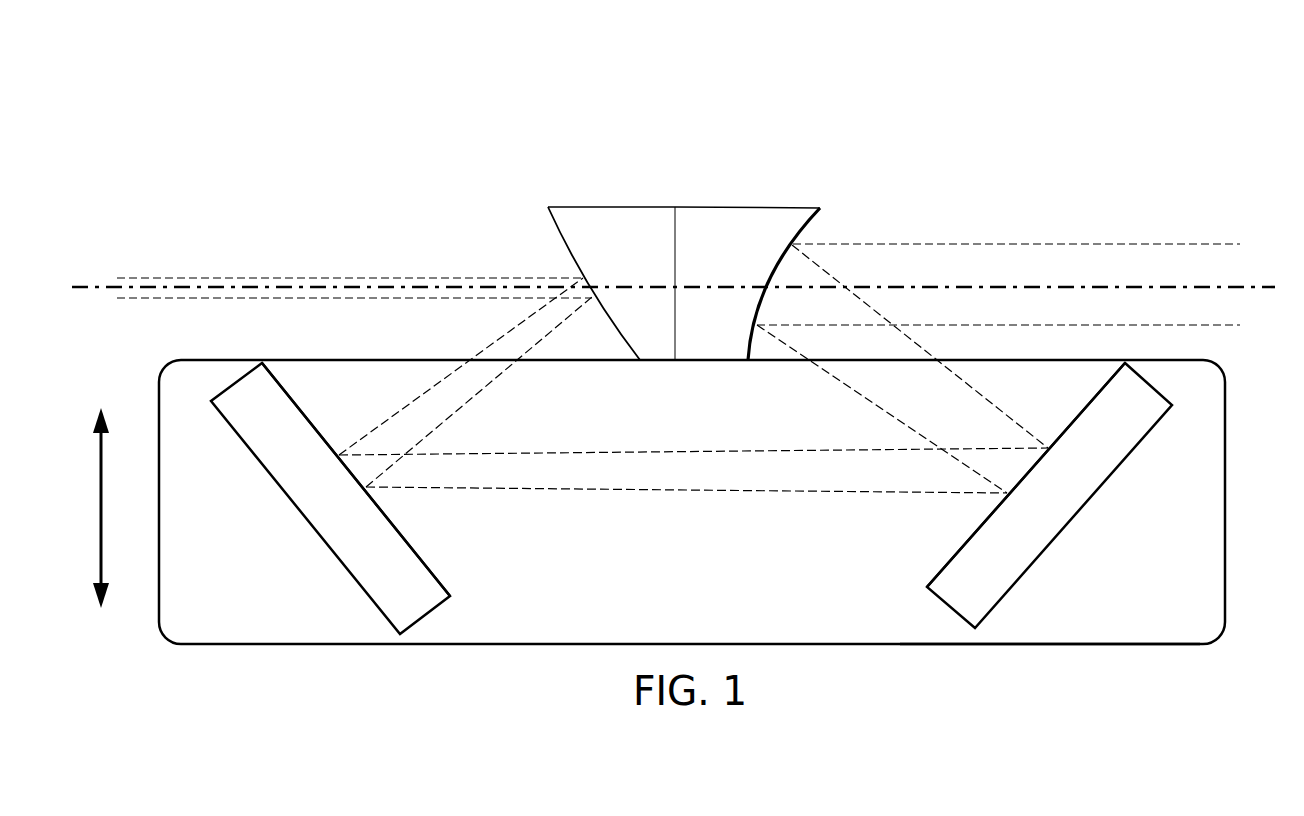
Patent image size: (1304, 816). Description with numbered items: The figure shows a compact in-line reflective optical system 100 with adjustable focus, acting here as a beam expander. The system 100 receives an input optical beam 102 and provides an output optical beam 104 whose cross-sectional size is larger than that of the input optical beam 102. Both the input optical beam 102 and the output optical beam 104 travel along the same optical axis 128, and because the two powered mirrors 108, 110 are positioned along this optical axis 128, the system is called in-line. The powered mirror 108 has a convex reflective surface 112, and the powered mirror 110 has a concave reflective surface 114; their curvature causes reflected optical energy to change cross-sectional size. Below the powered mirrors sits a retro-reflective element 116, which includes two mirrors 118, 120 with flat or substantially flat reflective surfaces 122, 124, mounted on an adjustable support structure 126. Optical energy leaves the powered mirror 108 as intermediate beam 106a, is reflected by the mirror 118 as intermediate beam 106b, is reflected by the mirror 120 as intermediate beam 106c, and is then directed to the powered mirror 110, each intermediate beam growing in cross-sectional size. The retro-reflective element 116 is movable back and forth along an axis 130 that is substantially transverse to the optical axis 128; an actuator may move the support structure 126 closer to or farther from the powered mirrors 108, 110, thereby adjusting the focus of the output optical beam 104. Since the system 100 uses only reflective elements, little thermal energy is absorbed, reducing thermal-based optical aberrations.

The compact in-line reflective optical system 100 is at (330, 121).
The input optical beam 102 is at (343, 280).
The output optical beam 104 is at (1017, 244).
The intermediate beam 106a is at (496, 380).
The intermediate beam 106b is at (680, 493).
The intermediate beam 106c is at (842, 382).
The powered mirror 108 is at (575, 254).
The powered mirror 110 is at (789, 252).
The reflective surface 112 is at (566, 246).
The reflective surface 114 is at (805, 232).
The retro-reflective element 116 is at (936, 676).
The mirror 118 is at (330, 498).
The mirror 120 is at (1049, 495).
The reflective surface 122 is at (322, 433).
The reflective surface 124 is at (1075, 418).
The support structure 126 is at (1035, 647).
The optical axis 128 is at (87, 285).
The axis 130 is at (100, 508).